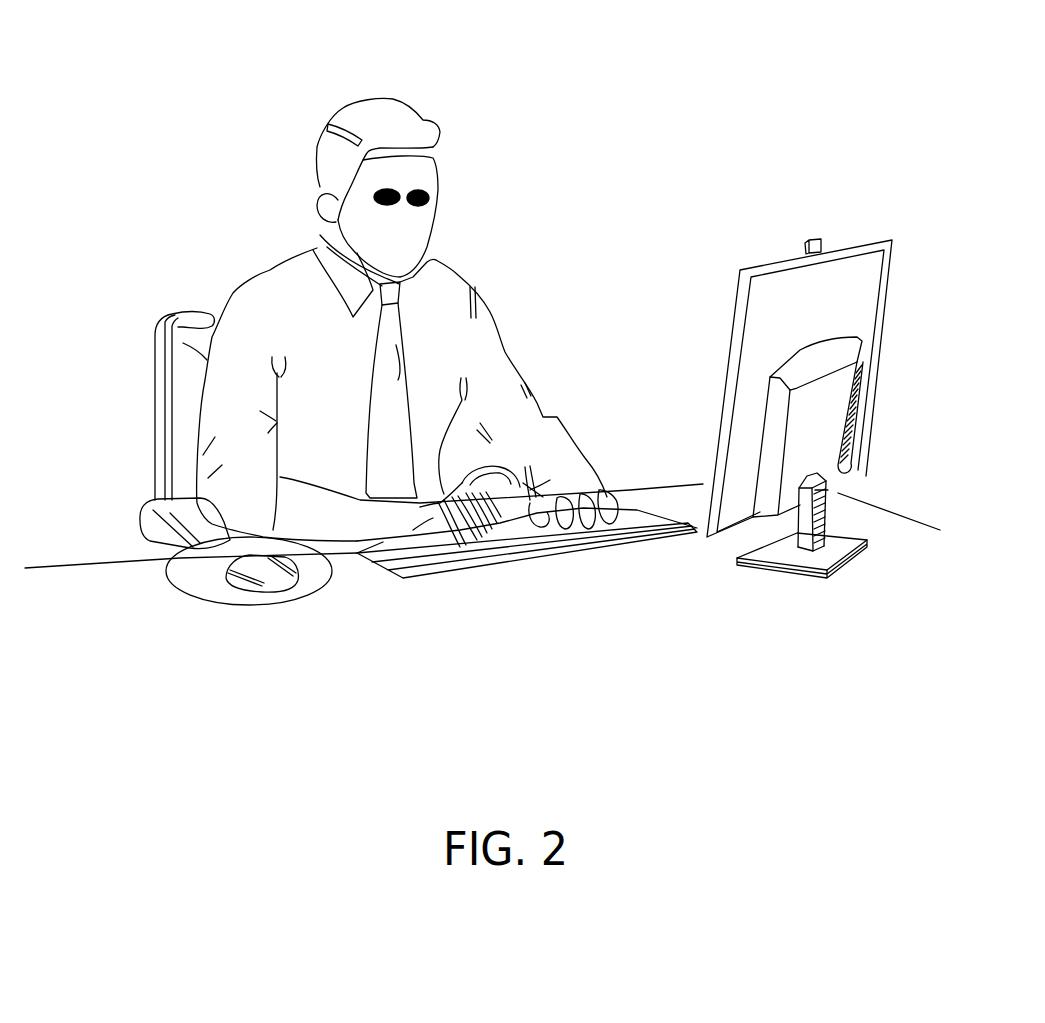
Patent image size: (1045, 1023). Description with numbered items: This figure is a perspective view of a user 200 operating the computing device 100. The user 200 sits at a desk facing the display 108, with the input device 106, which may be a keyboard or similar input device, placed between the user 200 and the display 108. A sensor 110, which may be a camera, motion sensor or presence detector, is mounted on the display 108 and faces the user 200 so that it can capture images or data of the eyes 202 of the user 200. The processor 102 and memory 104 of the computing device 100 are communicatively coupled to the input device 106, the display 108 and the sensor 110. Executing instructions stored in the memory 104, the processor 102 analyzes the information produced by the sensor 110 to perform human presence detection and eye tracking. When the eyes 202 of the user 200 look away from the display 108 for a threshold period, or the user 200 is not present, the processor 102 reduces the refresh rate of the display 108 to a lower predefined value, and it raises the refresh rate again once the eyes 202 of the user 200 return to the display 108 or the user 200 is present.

The computing device 100 is at (692, 95).
The processor 102 is at (827, 400).
The memory 104 is at (818, 435).
The input device 106 is at (643, 523).
The display 108 is at (828, 295).
The sensor 110 is at (822, 240).
The user 200 is at (450, 310).
The eyes 202 is at (430, 188).